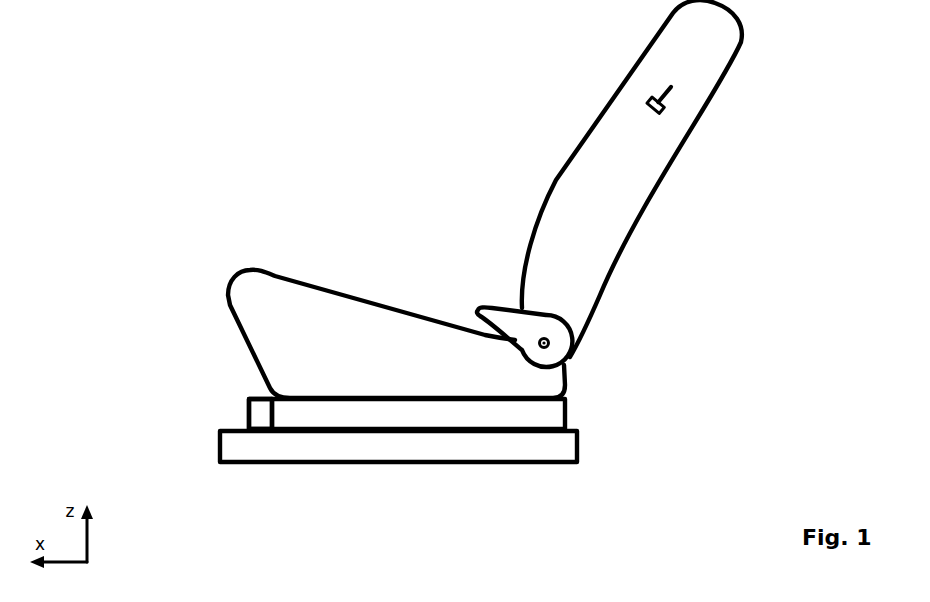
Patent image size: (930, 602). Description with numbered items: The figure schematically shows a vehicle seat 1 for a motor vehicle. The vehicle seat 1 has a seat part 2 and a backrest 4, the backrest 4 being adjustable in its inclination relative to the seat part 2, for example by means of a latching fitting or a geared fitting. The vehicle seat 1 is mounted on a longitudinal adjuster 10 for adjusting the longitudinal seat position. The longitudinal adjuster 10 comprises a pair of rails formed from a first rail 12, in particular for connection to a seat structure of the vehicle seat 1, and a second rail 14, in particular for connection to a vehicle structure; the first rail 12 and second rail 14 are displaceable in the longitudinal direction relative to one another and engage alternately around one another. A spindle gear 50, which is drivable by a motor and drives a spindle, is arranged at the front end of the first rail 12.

The vehicle seat 1 is at (350, 86).
The seat part 2 is at (343, 325).
The backrest 4 is at (603, 157).
The longitudinal adjuster 10 is at (215, 382).
The first rail 12 is at (552, 412).
The second rail 14 is at (562, 445).
The spindle gear 50 is at (258, 413).